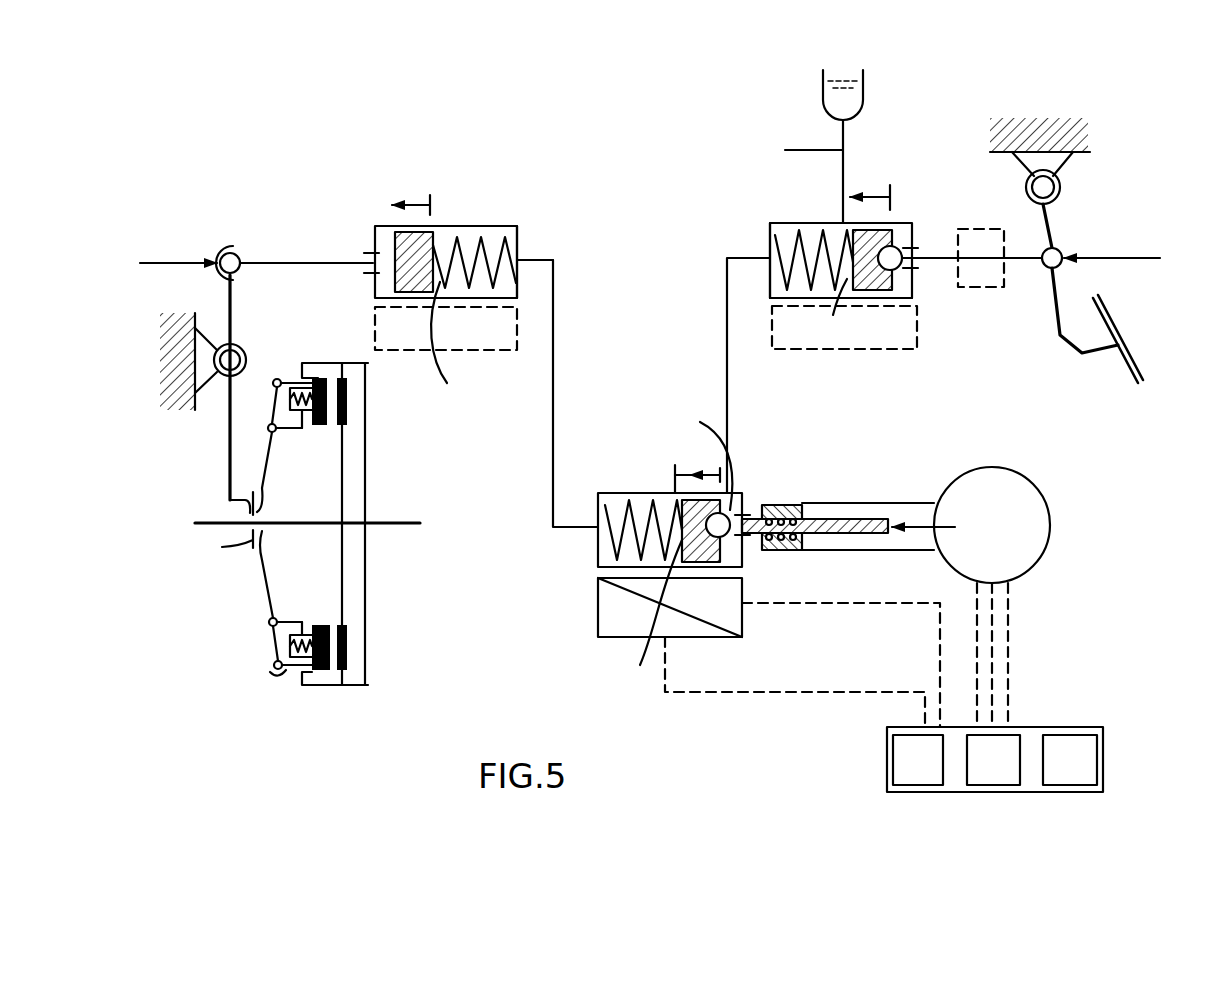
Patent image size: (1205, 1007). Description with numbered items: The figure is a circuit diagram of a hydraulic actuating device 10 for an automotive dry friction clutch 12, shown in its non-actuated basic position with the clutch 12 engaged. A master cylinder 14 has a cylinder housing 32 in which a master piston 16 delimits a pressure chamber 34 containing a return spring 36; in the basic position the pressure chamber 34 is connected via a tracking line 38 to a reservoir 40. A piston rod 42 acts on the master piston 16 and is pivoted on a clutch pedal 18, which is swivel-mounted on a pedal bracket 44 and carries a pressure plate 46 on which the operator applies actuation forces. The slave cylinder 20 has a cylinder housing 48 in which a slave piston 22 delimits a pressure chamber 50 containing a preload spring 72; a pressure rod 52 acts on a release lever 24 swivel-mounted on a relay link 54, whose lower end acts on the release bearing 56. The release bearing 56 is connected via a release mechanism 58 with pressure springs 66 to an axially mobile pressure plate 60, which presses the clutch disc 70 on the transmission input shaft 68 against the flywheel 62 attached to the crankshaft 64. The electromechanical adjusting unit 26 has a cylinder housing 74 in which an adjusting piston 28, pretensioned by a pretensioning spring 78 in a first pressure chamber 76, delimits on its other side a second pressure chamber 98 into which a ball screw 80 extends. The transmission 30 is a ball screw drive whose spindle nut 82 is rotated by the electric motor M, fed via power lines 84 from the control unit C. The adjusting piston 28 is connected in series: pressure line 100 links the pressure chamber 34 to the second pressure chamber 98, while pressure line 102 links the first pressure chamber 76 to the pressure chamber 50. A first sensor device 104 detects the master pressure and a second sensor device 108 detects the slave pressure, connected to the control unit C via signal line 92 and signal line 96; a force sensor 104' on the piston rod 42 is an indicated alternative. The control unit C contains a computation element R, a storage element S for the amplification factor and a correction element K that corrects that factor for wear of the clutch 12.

The hydraulic actuating device 10 is at (611, 186).
The clutch 12 is at (247, 574).
The master cylinder 14 is at (784, 219).
The master piston 16 is at (886, 228).
The clutch pedal 18 is at (1052, 320).
The slave cylinder 20 is at (381, 221).
The slave piston 22 is at (433, 233).
The release lever 24 is at (227, 439).
The electromechanical adjusting unit 26 is at (764, 482).
The adjusting piston 28 is at (742, 562).
The transmission 30 is at (795, 500).
The cylinder housing 32 is at (771, 244).
The pressure chamber 34 is at (779, 288).
The return spring 36 is at (800, 243).
The tracking line 38 is at (845, 133).
The reservoir 40 is at (865, 88).
The piston rod 42 is at (934, 252).
The pedal bracket 44 is at (1052, 161).
The pressure plate 46 is at (1124, 344).
The cylinder housing 48 is at (518, 235).
The pressure chamber 50 is at (491, 240).
The pressure rod 52 is at (279, 261).
The relay link 54 is at (203, 355).
The release bearing 56 is at (252, 540).
The release mechanism 58 is at (284, 446).
The pressure plate 60 is at (318, 378).
The flywheel 62 is at (338, 687).
The crankshaft 64 is at (405, 524).
The pressure springs 66 is at (348, 396).
The transmission input shaft 68 is at (297, 525).
The clutch disc 70 is at (347, 422).
The preload spring 72 is at (518, 278).
The cylinder housing 74 is at (599, 546).
The pressure chamber 76 is at (608, 508).
The pretensioning spring 78 is at (633, 513).
The ball screw 80 is at (882, 534).
The spindle nut 82 is at (803, 543).
The power lines 84 is at (977, 650).
The signal line 92 is at (803, 604).
The signal line 96 is at (780, 694).
The second pressure chamber 98 is at (744, 508).
The pressure line 100 is at (730, 378).
The pressure line 102 is at (555, 358).
The first sensor device 104 is at (807, 457).
The force sensor 104' is at (976, 314).
The second sensor device 108 is at (472, 325).
The control unit C is at (1093, 718).
The electric motor M is at (1001, 543).
The storage element S is at (921, 770).
The correction element K is at (996, 768).
The computation element R is at (1066, 762).